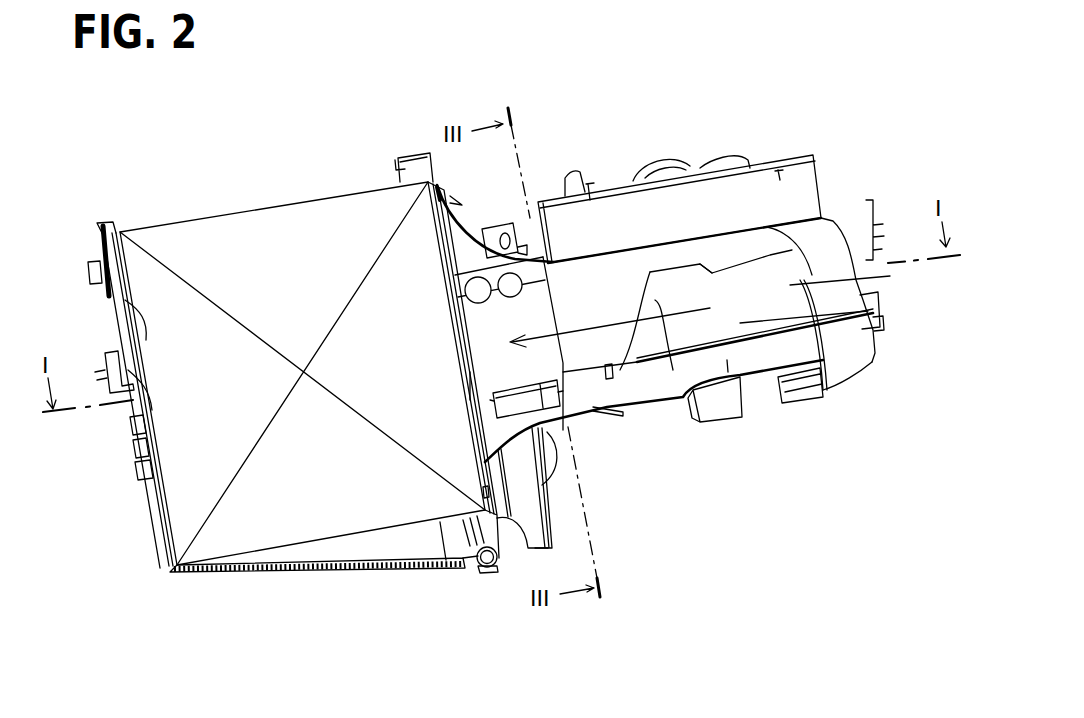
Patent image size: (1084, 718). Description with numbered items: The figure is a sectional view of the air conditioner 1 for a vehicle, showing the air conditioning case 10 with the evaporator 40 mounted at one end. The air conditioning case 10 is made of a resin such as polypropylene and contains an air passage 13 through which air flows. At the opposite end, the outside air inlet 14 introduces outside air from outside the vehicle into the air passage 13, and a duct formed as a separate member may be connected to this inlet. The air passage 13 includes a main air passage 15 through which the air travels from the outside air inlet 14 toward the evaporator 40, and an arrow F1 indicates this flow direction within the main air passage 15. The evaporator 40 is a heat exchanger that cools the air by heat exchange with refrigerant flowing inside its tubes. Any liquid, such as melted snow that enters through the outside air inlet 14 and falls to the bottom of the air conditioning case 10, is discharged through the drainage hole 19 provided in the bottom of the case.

The air conditioner 1 is at (172, 142).
The evaporator 40 is at (200, 466).
The drainage hole 19 is at (487, 569).
The air conditioning case 10 is at (637, 405).
The air passage 13 is at (750, 320).
The main air passage 15 is at (761, 341).
The outside air inlet 14 is at (612, 187).
The arrow F1 is at (655, 302).